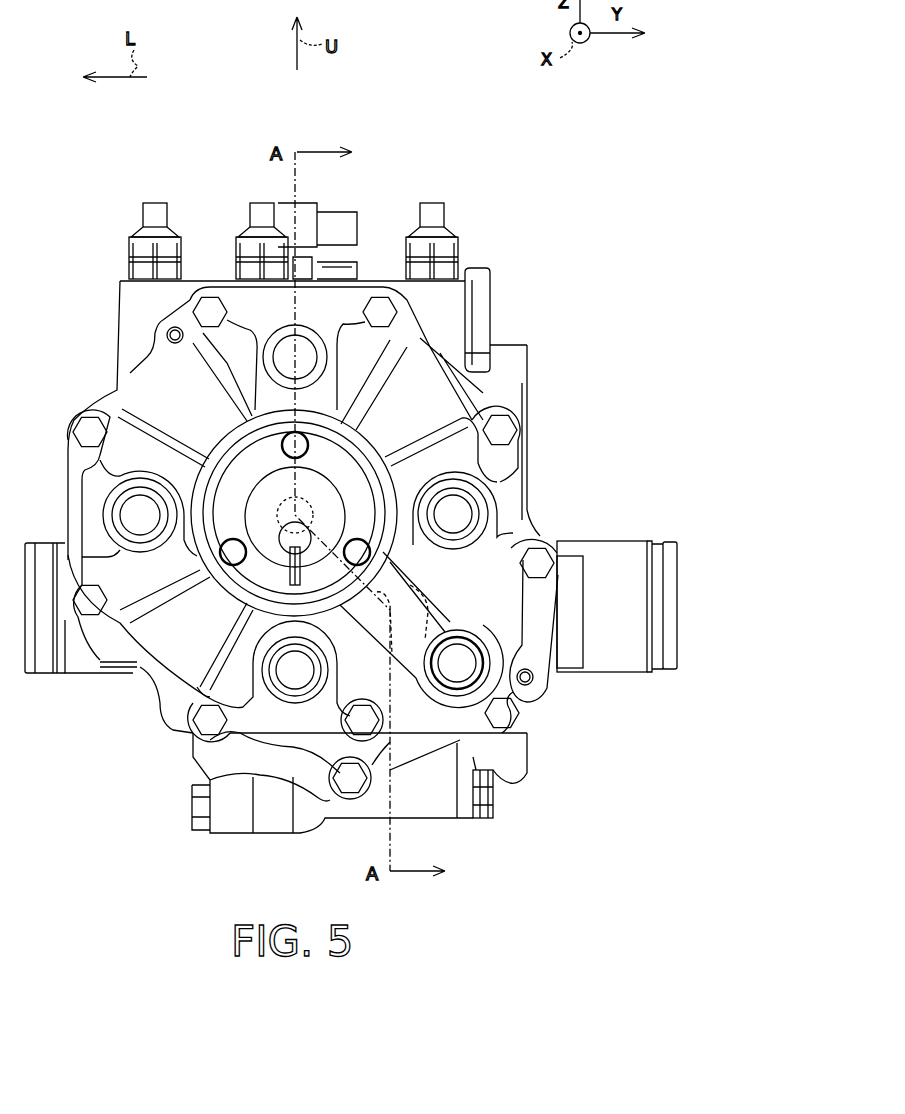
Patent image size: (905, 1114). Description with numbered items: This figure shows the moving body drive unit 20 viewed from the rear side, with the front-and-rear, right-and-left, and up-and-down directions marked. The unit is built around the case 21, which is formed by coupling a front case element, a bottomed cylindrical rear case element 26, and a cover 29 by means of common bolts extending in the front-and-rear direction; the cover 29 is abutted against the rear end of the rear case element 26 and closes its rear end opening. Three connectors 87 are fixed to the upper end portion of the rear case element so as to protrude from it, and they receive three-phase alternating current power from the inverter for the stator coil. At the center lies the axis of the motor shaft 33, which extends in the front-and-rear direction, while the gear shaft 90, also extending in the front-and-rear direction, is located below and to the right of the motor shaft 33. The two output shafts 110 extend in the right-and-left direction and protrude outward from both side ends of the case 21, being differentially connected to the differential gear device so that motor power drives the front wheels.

The moving body drive unit 20 is at (425, 150).
The case 21 is at (453, 314).
The rear case element 26 is at (452, 340).
The cover 29 is at (185, 642).
The motor shaft 33 is at (298, 512).
The connectors 87 is at (150, 232).
The gear shaft 90 is at (457, 615).
The output shafts 110 is at (75, 680).